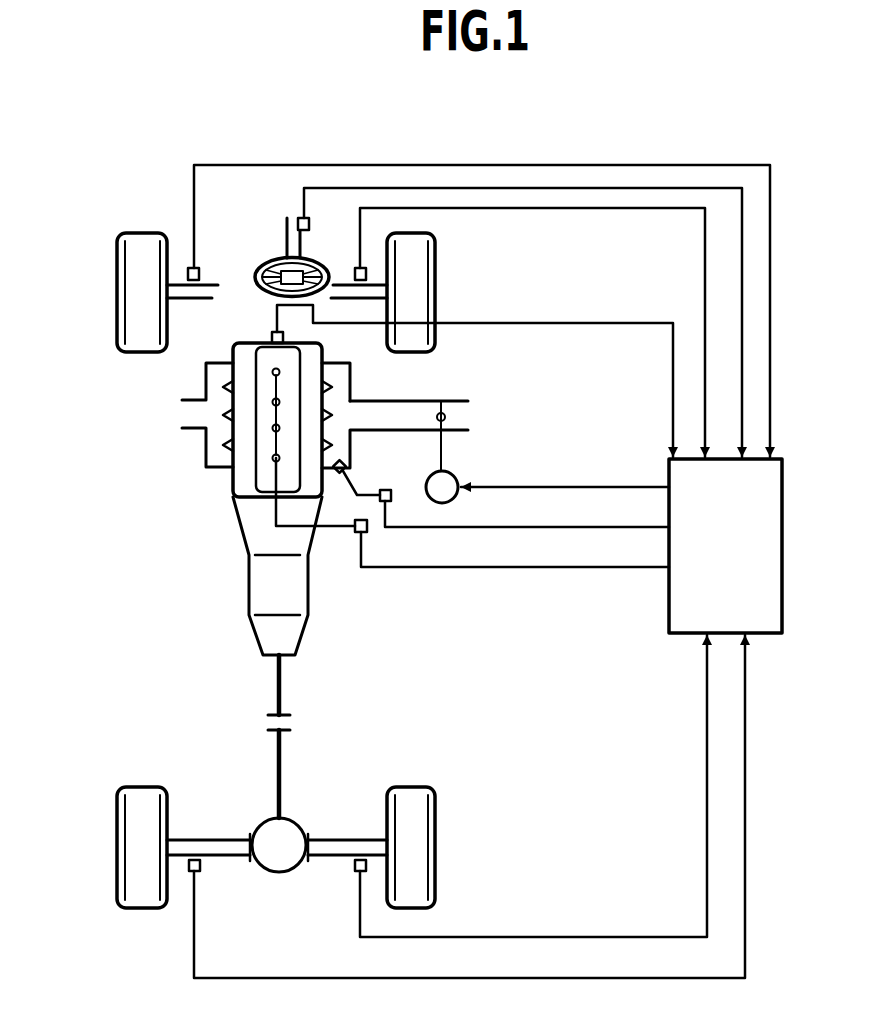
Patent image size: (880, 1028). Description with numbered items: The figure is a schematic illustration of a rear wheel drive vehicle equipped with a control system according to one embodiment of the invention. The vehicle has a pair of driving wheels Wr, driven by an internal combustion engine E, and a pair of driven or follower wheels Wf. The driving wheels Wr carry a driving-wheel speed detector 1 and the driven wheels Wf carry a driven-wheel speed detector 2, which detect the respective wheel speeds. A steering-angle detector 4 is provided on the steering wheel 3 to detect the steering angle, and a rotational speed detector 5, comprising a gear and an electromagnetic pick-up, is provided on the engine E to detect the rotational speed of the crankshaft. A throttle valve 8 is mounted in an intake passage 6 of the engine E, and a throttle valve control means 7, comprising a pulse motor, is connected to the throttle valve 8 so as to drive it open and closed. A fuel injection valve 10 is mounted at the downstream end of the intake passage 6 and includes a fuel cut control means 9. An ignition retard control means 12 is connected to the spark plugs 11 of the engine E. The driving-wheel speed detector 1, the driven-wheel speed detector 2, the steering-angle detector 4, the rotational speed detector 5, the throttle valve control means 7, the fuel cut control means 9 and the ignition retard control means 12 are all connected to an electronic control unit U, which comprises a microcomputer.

The driving-wheel speed detector 1 is at (200, 868).
The driven-wheel speed detector 2 is at (206, 258).
The steering wheel 3 is at (269, 263).
The steering-angle detector 4 is at (311, 223).
The rotational speed detector 5 is at (271, 334).
The intake passage 6 is at (395, 408).
The throttle valve control means 7 is at (454, 473).
The throttle valve 8 is at (446, 413).
The fuel cut control means 9 is at (392, 497).
The fuel injection valve 10 is at (346, 463).
The spark plugs 11 is at (273, 432).
The ignition retard control means 12 is at (368, 531).
The internal combustion engine E is at (231, 519).
The electronic control unit U is at (737, 562).
The driven wheels Wf is at (126, 284).
The driving wheels Wr is at (126, 847).